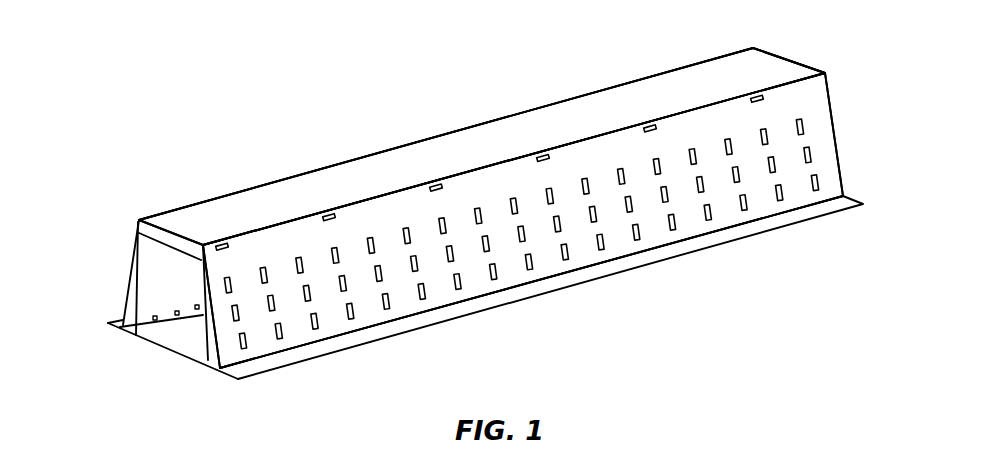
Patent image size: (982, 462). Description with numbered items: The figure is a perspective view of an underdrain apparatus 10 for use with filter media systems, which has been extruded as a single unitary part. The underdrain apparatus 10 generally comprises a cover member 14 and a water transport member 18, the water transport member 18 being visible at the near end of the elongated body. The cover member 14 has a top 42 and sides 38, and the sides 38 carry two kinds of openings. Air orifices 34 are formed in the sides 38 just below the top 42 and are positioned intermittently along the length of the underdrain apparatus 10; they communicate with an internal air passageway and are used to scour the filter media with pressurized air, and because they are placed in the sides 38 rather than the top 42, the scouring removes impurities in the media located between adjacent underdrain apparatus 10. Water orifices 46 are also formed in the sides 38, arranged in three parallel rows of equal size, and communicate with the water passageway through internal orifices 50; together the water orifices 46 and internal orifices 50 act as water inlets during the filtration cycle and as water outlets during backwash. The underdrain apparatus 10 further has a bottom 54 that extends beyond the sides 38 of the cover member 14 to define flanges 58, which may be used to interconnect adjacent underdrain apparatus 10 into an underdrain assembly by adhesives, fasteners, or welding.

The underdrain apparatus 10 is at (333, 106).
The cover member 14 is at (166, 208).
The water transport member 18 is at (132, 288).
The air orifices 34 is at (542, 153).
The sides 38 is at (807, 103).
The top 42 is at (745, 68).
The water orifices 46 is at (642, 237).
The internal orifices 50 is at (153, 324).
The bottom 54 is at (177, 353).
The flanges 58 is at (785, 225).